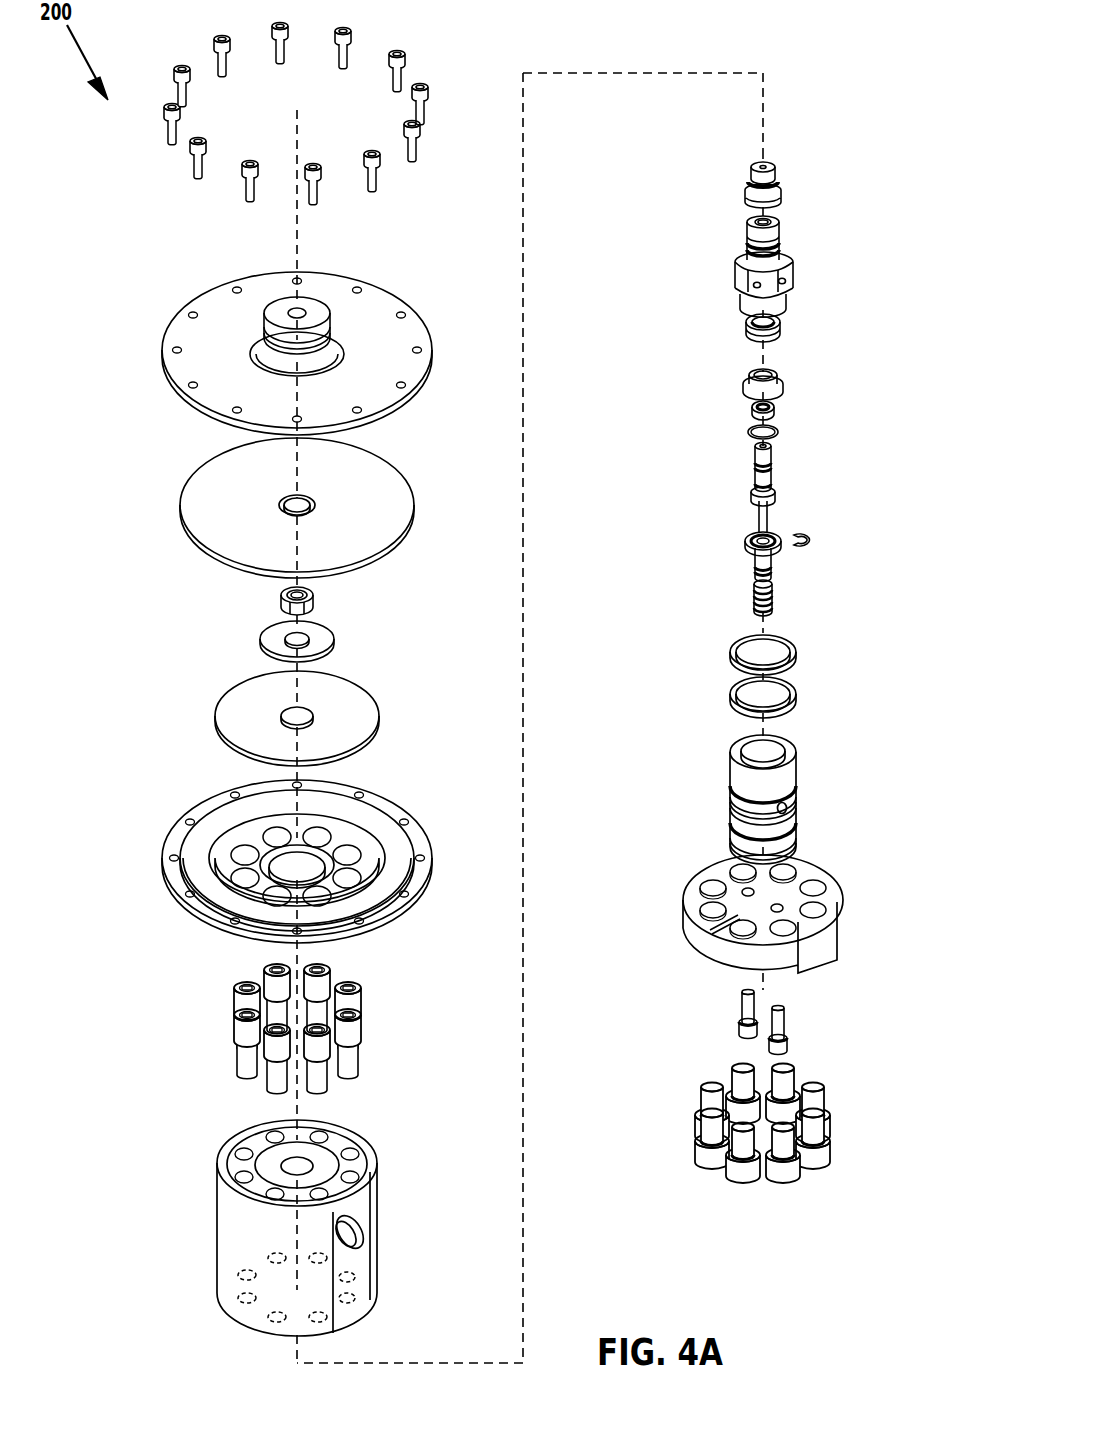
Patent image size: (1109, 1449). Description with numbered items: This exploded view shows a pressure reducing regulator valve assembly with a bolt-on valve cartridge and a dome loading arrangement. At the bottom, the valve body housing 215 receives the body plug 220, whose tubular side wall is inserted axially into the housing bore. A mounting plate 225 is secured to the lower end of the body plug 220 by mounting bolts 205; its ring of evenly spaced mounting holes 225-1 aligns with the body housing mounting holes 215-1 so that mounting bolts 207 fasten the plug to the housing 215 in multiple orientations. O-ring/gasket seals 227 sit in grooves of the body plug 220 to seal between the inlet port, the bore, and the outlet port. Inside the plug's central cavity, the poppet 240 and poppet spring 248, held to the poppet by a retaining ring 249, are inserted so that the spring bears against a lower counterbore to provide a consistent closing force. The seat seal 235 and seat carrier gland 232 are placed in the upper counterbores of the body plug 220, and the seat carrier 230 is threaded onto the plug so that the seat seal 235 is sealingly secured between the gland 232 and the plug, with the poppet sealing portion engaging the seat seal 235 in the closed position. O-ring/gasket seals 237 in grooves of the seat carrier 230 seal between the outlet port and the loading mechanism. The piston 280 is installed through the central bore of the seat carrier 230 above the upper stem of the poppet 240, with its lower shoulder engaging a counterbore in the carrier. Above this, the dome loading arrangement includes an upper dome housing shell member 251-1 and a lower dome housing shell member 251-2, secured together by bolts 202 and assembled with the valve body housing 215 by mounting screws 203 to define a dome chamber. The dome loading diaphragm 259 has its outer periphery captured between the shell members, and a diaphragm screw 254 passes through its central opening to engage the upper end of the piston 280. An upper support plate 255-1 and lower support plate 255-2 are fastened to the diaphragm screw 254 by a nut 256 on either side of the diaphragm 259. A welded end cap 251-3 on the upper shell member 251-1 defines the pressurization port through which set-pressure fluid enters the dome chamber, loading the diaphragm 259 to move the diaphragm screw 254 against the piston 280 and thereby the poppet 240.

The bolts 202 is at (392, 56).
The mounting screws 203 is at (360, 1024).
The mounting bolts 205 is at (784, 1030).
The mounting bolts 207 is at (818, 1157).
The valve body housing 215 is at (370, 1157).
The body housing mounting holes 215-1 is at (247, 1293).
The body plug 220 is at (797, 753).
The mounting plate 225 is at (812, 905).
The mounting holes 225-1 is at (782, 928).
The O-ring/gasket seals 227 is at (795, 700).
The seat carrier 230 is at (782, 254).
The seat carrier gland 232 is at (785, 377).
The seat seal 235 is at (775, 407).
The O-ring/gasket seals 237 is at (778, 338).
The poppet 240 is at (770, 517).
The poppet spring 248 is at (772, 592).
The retaining ring 249 is at (813, 537).
The upper dome housing shell member 251-1 is at (387, 328).
The lower dome housing shell member 251-2 is at (410, 820).
The welded end cap 251-3 is at (307, 305).
The diaphragm screw 254 is at (775, 172).
The upper support plate 255-1 is at (320, 638).
The lower support plate 255-2 is at (347, 707).
The nut 256 is at (313, 591).
The dome loading diaphragm 259 is at (377, 483).
The piston 280 is at (770, 470).